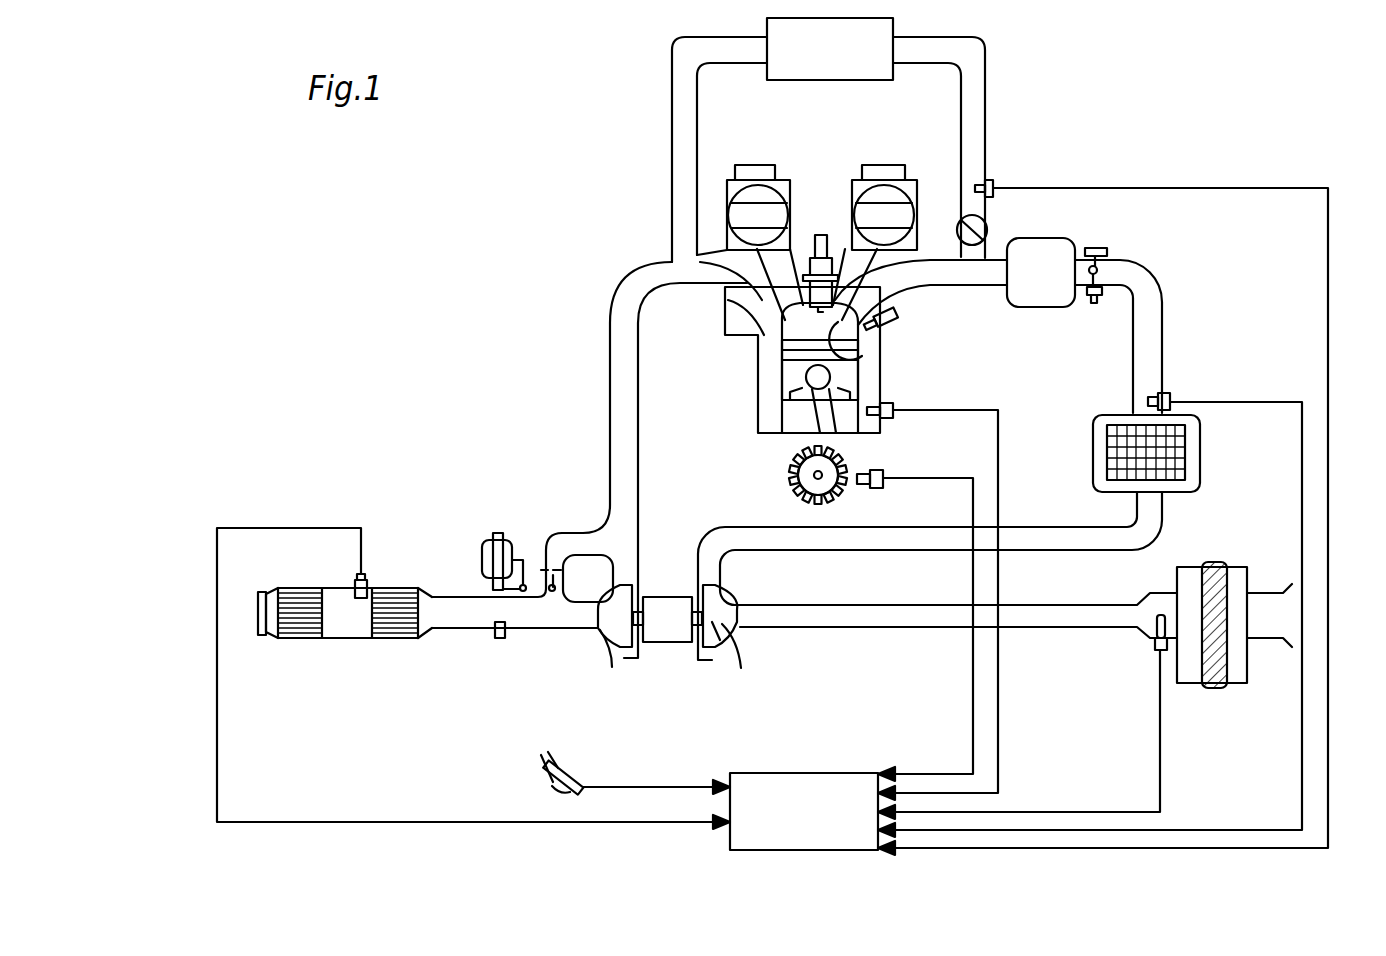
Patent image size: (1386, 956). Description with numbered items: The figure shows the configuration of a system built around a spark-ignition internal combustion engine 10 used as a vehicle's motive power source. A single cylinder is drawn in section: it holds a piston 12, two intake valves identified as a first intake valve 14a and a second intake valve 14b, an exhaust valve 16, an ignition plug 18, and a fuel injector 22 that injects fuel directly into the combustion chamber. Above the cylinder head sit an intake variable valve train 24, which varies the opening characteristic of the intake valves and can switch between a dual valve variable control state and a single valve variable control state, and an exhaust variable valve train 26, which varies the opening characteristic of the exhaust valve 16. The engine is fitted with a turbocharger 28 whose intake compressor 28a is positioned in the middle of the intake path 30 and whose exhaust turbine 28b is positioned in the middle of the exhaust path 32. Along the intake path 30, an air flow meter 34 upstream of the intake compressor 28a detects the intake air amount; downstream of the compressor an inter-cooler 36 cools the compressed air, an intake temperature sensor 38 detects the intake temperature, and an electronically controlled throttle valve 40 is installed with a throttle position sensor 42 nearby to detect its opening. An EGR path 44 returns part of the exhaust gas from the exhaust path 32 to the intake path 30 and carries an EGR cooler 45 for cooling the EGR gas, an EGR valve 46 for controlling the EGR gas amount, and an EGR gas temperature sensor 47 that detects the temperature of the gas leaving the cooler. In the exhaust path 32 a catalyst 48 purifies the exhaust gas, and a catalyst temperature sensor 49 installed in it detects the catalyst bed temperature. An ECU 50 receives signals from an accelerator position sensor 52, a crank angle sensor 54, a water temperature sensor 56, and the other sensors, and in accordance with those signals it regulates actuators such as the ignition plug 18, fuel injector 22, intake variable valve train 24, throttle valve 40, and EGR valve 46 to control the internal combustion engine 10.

The internal combustion engine 10 is at (738, 382).
The piston 12 is at (787, 387).
The first intake valve 14a is at (862, 370).
The second intake valve 14b is at (916, 362).
The exhaust valve 16 is at (765, 296).
The ignition plug 18 is at (812, 234).
The fuel injector 22 is at (900, 325).
The intake variable valve train 24 is at (905, 165).
The exhaust variable valve train 26 is at (742, 165).
The turbocharger 28 is at (665, 662).
The intake compressor 28a is at (738, 656).
The exhaust turbine 28b is at (613, 662).
The intake path 30 is at (993, 290).
The exhaust path 32 is at (608, 416).
The air flow meter 34 is at (1152, 645).
The inter-cooler 36 is at (1200, 466).
The intake temperature sensor 38 is at (1163, 393).
The throttle valve 40 is at (1100, 268).
The throttle position sensor 42 is at (1092, 304).
The EGR path 44 is at (672, 196).
The EGR cooler 45 is at (893, 24).
The EGR valve 46 is at (987, 226).
The EGR gas temperature sensor 47 is at (992, 178).
The catalyst 48 is at (346, 625).
The catalyst temperature sensor 49 is at (368, 578).
The ECU 50 is at (850, 773).
The accelerator position sensor 52 is at (582, 785).
The crank angle sensor 54 is at (893, 472).
The water temperature sensor 56 is at (895, 420).